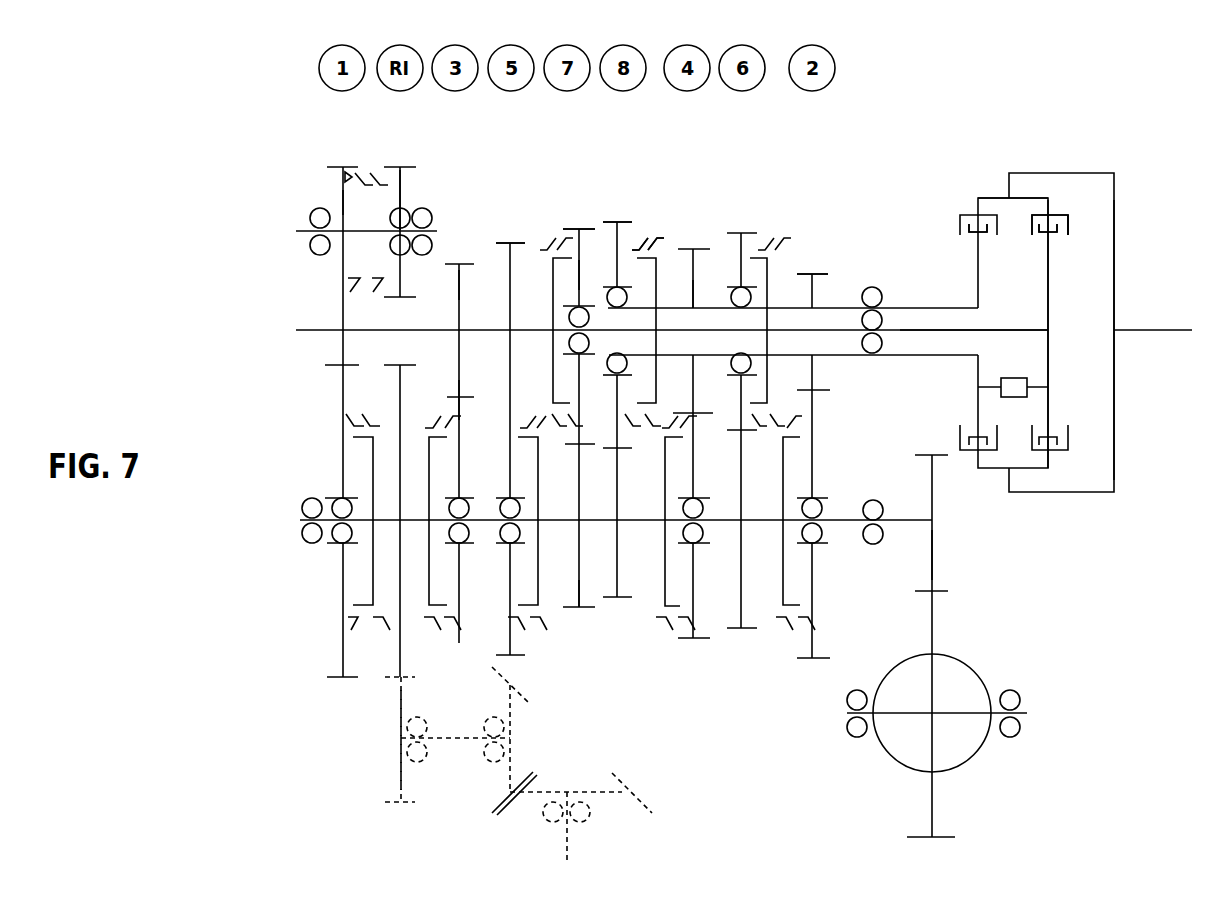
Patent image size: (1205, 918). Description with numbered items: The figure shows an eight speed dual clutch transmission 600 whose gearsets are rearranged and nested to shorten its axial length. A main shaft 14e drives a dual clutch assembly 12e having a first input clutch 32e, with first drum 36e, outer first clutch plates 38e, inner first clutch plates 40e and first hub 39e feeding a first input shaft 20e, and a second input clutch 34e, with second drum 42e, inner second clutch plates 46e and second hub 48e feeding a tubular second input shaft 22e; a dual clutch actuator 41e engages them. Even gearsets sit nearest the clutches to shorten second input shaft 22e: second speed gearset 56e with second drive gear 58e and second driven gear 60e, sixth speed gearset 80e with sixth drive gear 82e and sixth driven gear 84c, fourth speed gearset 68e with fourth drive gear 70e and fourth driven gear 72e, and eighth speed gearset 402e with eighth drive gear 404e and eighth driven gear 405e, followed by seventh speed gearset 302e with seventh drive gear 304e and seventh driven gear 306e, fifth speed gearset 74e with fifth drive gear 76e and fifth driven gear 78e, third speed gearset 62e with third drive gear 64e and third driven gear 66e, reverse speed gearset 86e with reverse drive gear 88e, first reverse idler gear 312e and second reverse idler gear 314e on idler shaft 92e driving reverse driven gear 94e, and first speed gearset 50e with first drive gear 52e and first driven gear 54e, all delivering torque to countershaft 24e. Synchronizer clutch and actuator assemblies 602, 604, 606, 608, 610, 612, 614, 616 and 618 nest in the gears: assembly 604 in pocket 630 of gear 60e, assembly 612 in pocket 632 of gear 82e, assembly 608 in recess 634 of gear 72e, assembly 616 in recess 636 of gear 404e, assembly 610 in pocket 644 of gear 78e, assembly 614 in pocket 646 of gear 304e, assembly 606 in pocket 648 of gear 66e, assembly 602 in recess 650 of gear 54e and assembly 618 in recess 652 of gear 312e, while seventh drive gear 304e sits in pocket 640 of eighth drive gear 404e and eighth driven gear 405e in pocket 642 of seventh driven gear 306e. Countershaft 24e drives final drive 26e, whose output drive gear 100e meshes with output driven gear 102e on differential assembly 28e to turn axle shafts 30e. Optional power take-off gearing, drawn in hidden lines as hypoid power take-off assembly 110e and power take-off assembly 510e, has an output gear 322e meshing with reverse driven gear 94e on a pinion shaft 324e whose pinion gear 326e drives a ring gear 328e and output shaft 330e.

The eight speed automatic transmission 600 is at (197, 143).
The first speed gearset 50e is at (328, 152).
The recess 652 is at (343, 178).
The ninth synchronizer clutch and actuator assembly 618 is at (368, 162).
The reverse speed gearset 86e is at (400, 150).
The second reverse idler gear 314e is at (404, 180).
The first reverse idler gear 312e is at (343, 200).
The idler shaft 92e is at (297, 232).
The reverse drive gear 88e is at (400, 268).
The first drive gear 52e is at (343, 298).
The third speed gearset 62e is at (455, 260).
The third drive gear 64e is at (459, 287).
The third driven gear 66e is at (459, 397).
The fifth drive gear 76e is at (510, 297).
The fifth speed gearset 74e is at (520, 232).
The fifth driven gear 78e is at (510, 588).
The pocket 646 is at (578, 229).
The seventh synchronizer clutch and actuator assembly 614 is at (543, 238).
The seventh speed gearset 302e is at (573, 215).
The seventh drive gear 304e is at (580, 270).
The seventh driven gear 306e is at (626, 525).
The eighth drive gear 404e is at (615, 237).
The eighth speed gearset 402e is at (625, 215).
The eighth driven gear 405e is at (643, 494).
The recess 636 is at (625, 230).
The eighth synchronizer clutch and actuator assembly 616 is at (660, 238).
The fourth speed gearset 68e is at (693, 238).
The fourth drive gear 70e is at (693, 292).
The fourth driven gear 72e is at (718, 588).
The sixth speed gearset 80e is at (746, 228).
The sixth drive gear 82e is at (733, 277).
The sixth driven gear 84c is at (742, 555).
The pocket 632 is at (755, 238).
The sixth synchronizer clutch and actuator assembly 612 is at (783, 242).
The second speed gearset 56e is at (820, 265).
The second drive gear 58e is at (813, 293).
The second driven gear 60e is at (822, 397).
The second input shaft 22e is at (898, 307).
The countershaft 24e is at (905, 530).
The first input shaft 20e is at (1036, 330).
The dual clutch actuator 41e is at (1022, 375).
The inner second clutch plates 46e is at (990, 238).
The inner first clutch plates 40e is at (1038, 238).
The second hub 48e is at (960, 217).
The second drum 42e is at (978, 198).
The second input clutch 34e is at (960, 190).
The dual clutch assembly 12e is at (1057, 160).
The first drum 36e is at (1062, 213).
The first input clutch 32e is at (1100, 218).
The outer first clutch plates 38e is at (1070, 230).
The first hub 39e is at (1050, 297).
The main shaft 14e is at (1152, 332).
The recess 650 is at (350, 403).
The reverse driven gear 94e is at (400, 393).
The pocket 644 is at (513, 423).
The pocket 640 is at (615, 422).
The output drive gear 100e is at (932, 470).
The final drive 26e is at (947, 555).
The output driven gear 102e is at (932, 610).
The axle shafts 30e is at (965, 713).
The differential assembly 28e is at (990, 772).
The first driven gear 54e is at (343, 652).
The hypoid power take-off assembly 110e is at (318, 715).
The first synchronizer clutch and actuator assembly 602 is at (365, 625).
The third synchronizer clutch and actuator assembly 606 is at (428, 625).
The fifth synchronizer clutch and actuator assembly 610 is at (548, 625).
The fourth synchronizer clutch and actuator assembly 608 is at (660, 618).
The second synchronizer clutch and actuator assembly 604 is at (778, 620).
The pocket 648 is at (443, 642).
The pocket 642 is at (595, 600).
The recess 634 is at (693, 632).
The pocket 630 is at (805, 647).
The output gear 322e is at (392, 775).
The pinion shaft 324e is at (452, 745).
The pinion gear 326e is at (516, 708).
The ring gear 328e is at (620, 775).
The output shaft 330e is at (567, 840).
The power take-off assembly 510e is at (598, 700).